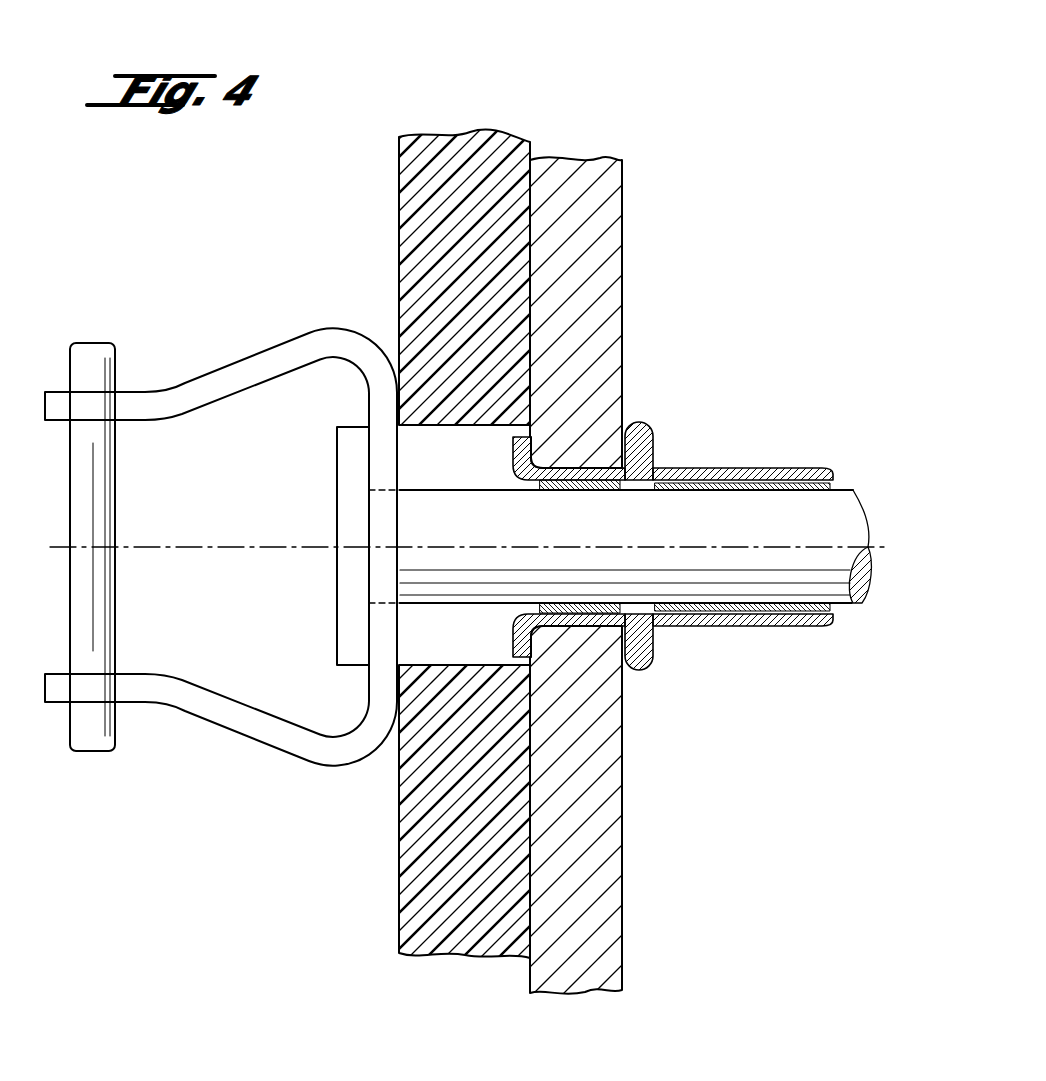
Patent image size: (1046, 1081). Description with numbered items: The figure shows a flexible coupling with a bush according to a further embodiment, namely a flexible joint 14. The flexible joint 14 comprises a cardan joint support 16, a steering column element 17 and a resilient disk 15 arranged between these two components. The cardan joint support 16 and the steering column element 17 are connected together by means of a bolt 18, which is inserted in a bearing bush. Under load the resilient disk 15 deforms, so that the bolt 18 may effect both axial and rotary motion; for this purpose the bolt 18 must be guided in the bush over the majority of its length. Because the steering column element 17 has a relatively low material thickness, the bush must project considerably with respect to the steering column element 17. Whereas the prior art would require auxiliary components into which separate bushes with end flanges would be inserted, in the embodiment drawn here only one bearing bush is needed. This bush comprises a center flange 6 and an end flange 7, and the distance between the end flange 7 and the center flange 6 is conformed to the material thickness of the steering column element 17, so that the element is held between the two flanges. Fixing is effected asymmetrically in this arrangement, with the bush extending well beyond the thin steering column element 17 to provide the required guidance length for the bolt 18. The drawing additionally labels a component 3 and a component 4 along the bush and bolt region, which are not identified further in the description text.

The flexible joint 14 is at (534, 528).
The resilient disk 15 is at (440, 853).
The steering column element 17 is at (587, 806).
The cardan joint support 16 is at (275, 733).
The end flange 7 is at (513, 452).
The pipe 4 is at (629, 565).
The bolt 18 is at (735, 580).
The sleeve 3 is at (657, 502).
The center flange 6 is at (647, 427).